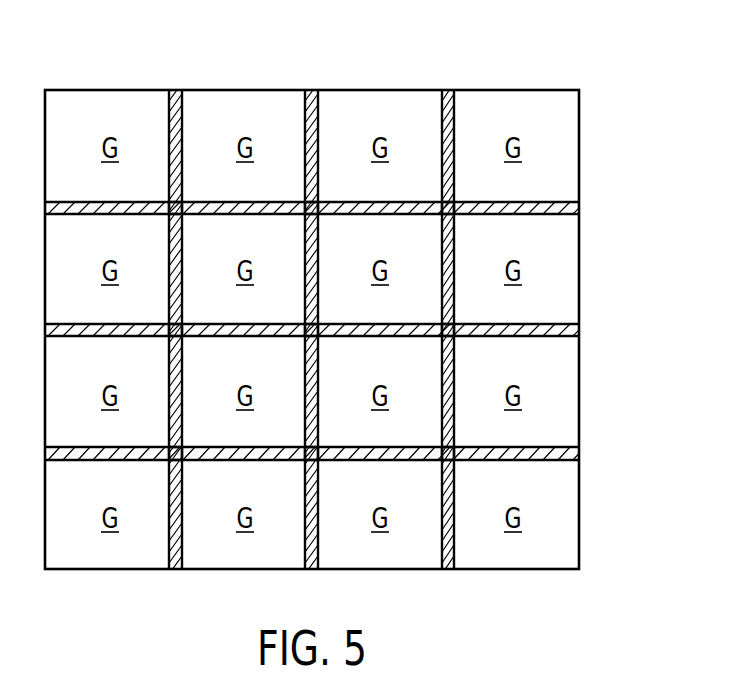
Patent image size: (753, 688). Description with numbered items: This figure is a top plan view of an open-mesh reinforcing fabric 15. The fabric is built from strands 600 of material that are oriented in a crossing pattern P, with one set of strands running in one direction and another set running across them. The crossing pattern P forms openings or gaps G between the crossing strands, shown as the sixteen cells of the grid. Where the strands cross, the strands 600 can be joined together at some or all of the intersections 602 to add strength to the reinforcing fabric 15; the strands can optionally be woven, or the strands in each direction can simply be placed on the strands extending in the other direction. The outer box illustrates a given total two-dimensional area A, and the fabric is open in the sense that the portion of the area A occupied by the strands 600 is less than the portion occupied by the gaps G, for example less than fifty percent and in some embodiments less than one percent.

The open-mesh reinforcing fabric 15 is at (619, 96).
The strands 600 is at (183, 104).
The intersections 602 is at (178, 208).
The two-dimensional area A is at (594, 284).
The crossing pattern P is at (345, 352).